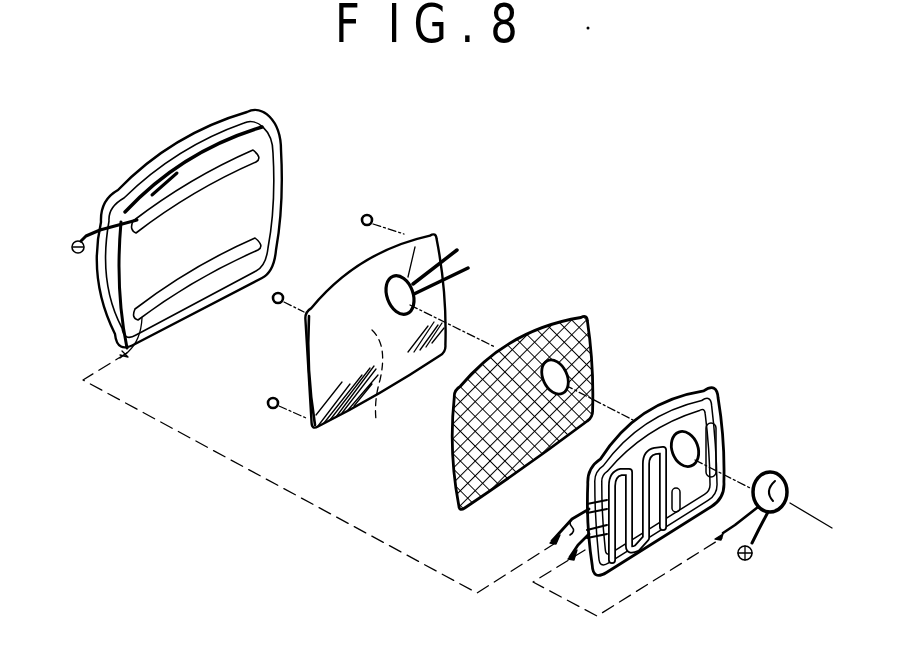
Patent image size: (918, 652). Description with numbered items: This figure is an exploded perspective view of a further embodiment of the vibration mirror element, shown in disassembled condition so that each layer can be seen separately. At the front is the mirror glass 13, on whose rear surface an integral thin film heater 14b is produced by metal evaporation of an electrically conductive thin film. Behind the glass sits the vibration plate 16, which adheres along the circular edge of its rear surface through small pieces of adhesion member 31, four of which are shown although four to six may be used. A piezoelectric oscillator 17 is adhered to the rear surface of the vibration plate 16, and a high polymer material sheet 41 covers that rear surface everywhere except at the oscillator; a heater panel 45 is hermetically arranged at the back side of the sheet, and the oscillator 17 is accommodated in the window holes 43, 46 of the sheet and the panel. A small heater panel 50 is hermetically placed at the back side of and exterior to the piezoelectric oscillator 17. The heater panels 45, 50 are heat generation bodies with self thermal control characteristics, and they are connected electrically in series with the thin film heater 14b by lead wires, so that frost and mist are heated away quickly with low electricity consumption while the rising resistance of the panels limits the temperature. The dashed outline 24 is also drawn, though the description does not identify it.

The mirror glass 13 is at (157, 180).
The thin film heater 14b is at (258, 139).
The vibration plate 16 is at (309, 352).
The piezoelectric oscillator 17 is at (434, 236).
The casing 24 is at (188, 438).
The adhesion member 31 is at (369, 215).
The high polymer material sheet 41 is at (455, 487).
The window hole 43 is at (590, 353).
The heater panel 45 is at (683, 391).
The window hole 46 is at (692, 435).
The small heater panel 50 is at (777, 483).